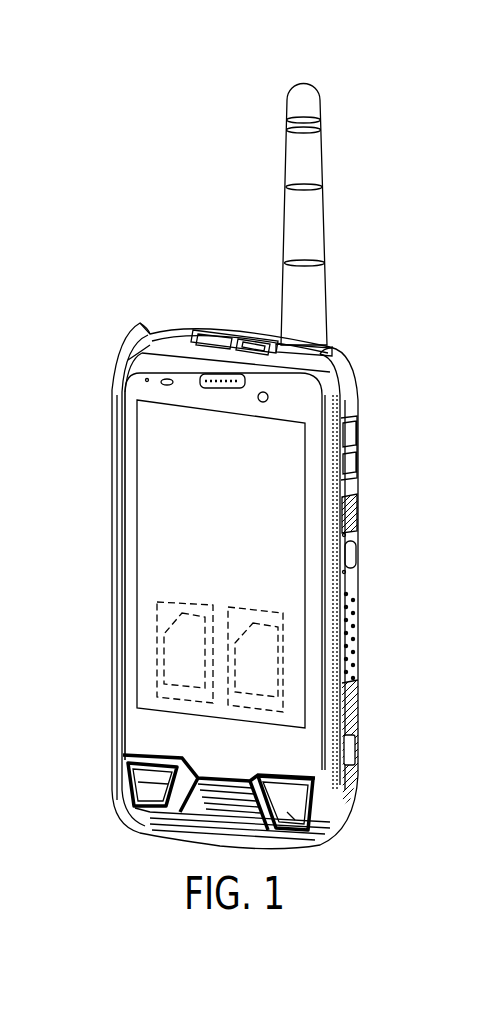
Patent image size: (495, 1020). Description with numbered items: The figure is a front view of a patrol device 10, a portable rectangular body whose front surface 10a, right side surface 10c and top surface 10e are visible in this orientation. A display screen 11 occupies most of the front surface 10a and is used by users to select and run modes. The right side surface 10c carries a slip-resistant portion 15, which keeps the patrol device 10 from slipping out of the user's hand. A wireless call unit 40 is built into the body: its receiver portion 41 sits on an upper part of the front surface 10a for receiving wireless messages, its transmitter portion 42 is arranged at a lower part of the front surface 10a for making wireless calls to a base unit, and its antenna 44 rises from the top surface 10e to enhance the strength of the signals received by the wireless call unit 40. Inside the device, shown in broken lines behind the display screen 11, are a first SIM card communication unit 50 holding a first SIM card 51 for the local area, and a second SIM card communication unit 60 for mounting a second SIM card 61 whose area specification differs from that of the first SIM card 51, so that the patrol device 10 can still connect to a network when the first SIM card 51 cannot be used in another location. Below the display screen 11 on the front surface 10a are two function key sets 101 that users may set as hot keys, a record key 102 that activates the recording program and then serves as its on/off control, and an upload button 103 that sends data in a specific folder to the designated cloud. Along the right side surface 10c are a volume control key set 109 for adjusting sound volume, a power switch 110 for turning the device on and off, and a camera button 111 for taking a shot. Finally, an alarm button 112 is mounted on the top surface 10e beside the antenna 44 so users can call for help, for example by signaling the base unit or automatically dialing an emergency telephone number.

The patrol device 10 is at (130, 328).
The top surface 10e is at (163, 322).
The front surface 10a is at (147, 527).
The right side surface 10c is at (357, 518).
The display screen 11 is at (173, 565).
The slip-resistant portion 15 is at (358, 608).
The wireless call unit 40 is at (285, 478).
The receiver portion 41 is at (196, 333).
The transmitter portion 42 is at (200, 808).
The antenna 44 is at (308, 228).
The first SIM card communication unit 50 is at (158, 618).
The first SIM card 51 is at (173, 656).
The second SIM card communication unit 60 is at (284, 627).
The second SIM card 61 is at (278, 656).
The function key sets 101 is at (150, 771).
The record key 102 is at (150, 791).
The upload button 103 is at (345, 820).
The volume control key set 109 is at (358, 462).
The power switch 110 is at (355, 563).
The camera button 111 is at (354, 747).
The alarm button 112 is at (257, 330).